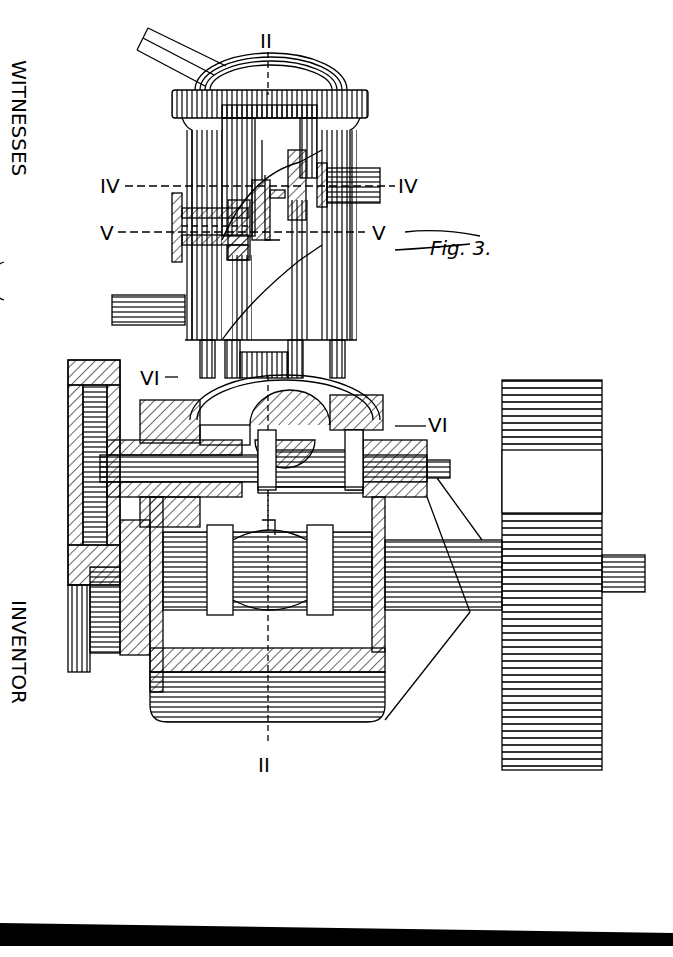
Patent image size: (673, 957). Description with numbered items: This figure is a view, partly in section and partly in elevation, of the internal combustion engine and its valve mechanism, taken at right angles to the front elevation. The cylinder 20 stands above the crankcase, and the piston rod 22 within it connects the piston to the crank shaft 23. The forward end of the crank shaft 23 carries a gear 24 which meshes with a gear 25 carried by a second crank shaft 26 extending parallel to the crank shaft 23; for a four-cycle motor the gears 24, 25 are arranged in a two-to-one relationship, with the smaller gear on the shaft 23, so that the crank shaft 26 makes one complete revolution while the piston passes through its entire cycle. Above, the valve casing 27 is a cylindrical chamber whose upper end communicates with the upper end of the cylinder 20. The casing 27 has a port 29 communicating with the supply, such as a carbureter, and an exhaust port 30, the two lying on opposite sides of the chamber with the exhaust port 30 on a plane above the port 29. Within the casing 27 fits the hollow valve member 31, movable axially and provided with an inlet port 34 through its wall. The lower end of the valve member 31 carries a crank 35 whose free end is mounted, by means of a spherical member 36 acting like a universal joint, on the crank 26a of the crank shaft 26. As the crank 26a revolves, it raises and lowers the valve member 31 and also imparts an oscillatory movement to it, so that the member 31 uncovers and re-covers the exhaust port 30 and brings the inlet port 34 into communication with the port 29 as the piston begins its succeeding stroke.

The cylinder 20 is at (187, 140).
The valve casing 27 is at (295, 163).
The exhaust port 30 is at (317, 185).
The inlet port 34 is at (230, 207).
The port 29 is at (182, 232).
The valve member 31 is at (267, 240).
The crank 35 is at (330, 372).
The spherical member 36 is at (345, 400).
The crank shaft 26 is at (92, 468).
The crank 26a is at (355, 470).
The gear 25 is at (92, 417).
The piston rod 22 is at (92, 497).
The gear 24 is at (100, 556).
The crank shaft 23 is at (624, 585).